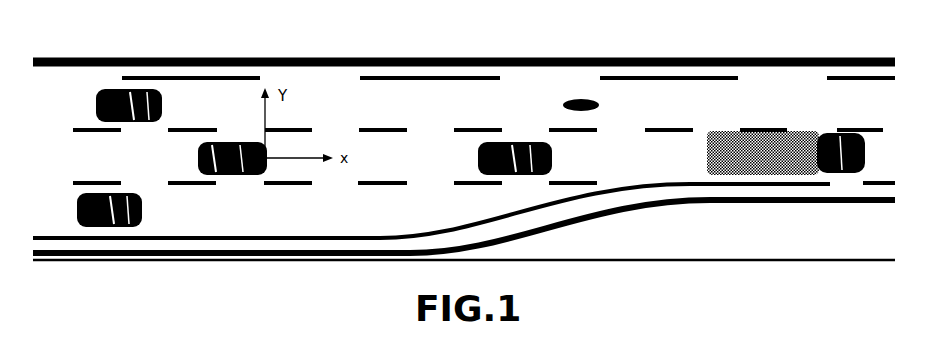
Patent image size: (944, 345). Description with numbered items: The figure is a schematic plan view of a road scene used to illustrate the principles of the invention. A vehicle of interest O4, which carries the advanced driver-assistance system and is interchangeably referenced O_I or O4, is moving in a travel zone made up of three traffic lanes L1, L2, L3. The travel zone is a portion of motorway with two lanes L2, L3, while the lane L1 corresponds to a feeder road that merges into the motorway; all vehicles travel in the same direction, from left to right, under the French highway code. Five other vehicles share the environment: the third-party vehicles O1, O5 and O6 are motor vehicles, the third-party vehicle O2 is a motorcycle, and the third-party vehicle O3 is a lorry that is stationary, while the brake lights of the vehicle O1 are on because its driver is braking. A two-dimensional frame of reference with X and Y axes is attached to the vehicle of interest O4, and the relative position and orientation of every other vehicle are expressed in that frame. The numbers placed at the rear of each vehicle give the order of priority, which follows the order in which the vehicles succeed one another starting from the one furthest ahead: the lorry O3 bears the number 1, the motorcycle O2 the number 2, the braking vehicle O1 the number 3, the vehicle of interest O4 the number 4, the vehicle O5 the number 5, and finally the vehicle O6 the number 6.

The third-party vehicle O1 is at (499, 134).
The third-party vehicle (motorcycle) O2 is at (558, 70).
The third-party vehicle (lorry) O3 is at (774, 103).
The vehicle of interest O4 is at (261, 179).
The third-party vehicle O5 is at (120, 67).
The third-party vehicle O6 is at (99, 260).
The traffic lane (feeder road) L1 is at (267, 222).
The traffic lane L2 is at (83, 157).
The traffic lane L3 is at (82, 90).
The priority number 1 is at (774, 153).
The priority number 2 is at (570, 106).
The priority number 3 is at (507, 158).
The priority number 4 is at (223, 158).
The priority number 5 is at (120, 105).
The priority number 6 is at (99, 210).